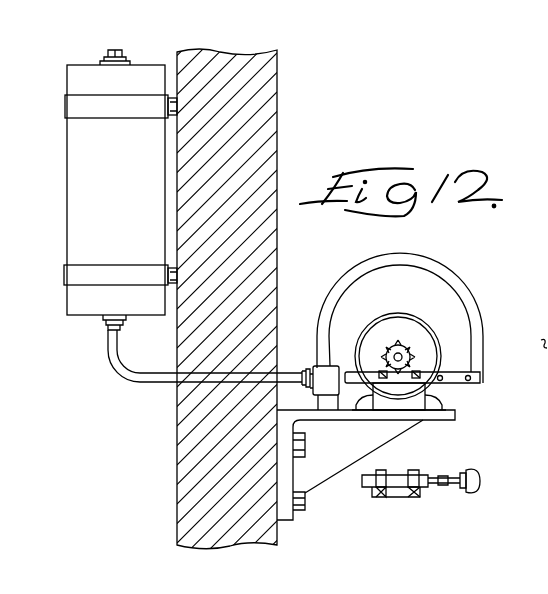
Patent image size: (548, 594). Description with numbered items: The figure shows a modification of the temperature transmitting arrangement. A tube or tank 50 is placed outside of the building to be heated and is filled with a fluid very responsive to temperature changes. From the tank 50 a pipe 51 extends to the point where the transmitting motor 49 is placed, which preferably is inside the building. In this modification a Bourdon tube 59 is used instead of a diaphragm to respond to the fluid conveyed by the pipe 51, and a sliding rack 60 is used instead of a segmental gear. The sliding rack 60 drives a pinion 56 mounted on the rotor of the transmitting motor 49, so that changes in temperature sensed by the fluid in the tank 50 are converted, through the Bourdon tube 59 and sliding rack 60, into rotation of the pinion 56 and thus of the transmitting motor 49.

The transmitting motor 49 is at (395, 313).
The tube or tank 50 is at (67, 238).
The pipe 51 is at (150, 378).
The pinion 56 is at (400, 350).
The Bourdon tube 59 is at (480, 481).
The sliding rack 60 is at (425, 378).